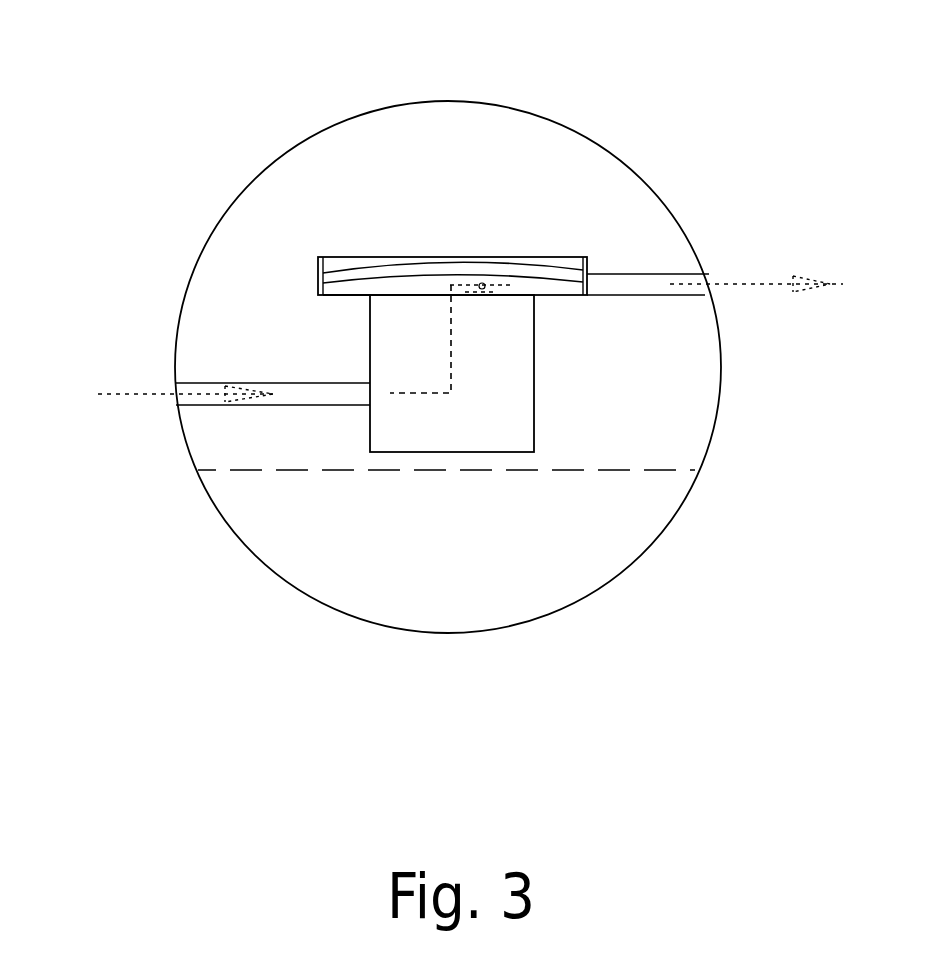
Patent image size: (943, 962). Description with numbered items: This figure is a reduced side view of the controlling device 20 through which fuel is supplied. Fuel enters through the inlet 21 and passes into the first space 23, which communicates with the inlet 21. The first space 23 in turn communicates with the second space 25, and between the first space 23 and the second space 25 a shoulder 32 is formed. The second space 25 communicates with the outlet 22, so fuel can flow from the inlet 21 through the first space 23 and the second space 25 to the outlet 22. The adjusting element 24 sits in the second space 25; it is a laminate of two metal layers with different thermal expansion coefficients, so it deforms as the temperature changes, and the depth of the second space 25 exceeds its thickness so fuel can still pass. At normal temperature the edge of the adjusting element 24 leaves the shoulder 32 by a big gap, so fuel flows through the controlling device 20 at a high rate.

The controlling device 20 is at (407, 593).
The inlet 21 is at (309, 394).
The outlet 22 is at (615, 287).
The first space 23 is at (505, 320).
The adjusting element 24 is at (415, 267).
The second space 25 is at (325, 260).
The shoulder 32 is at (345, 296).